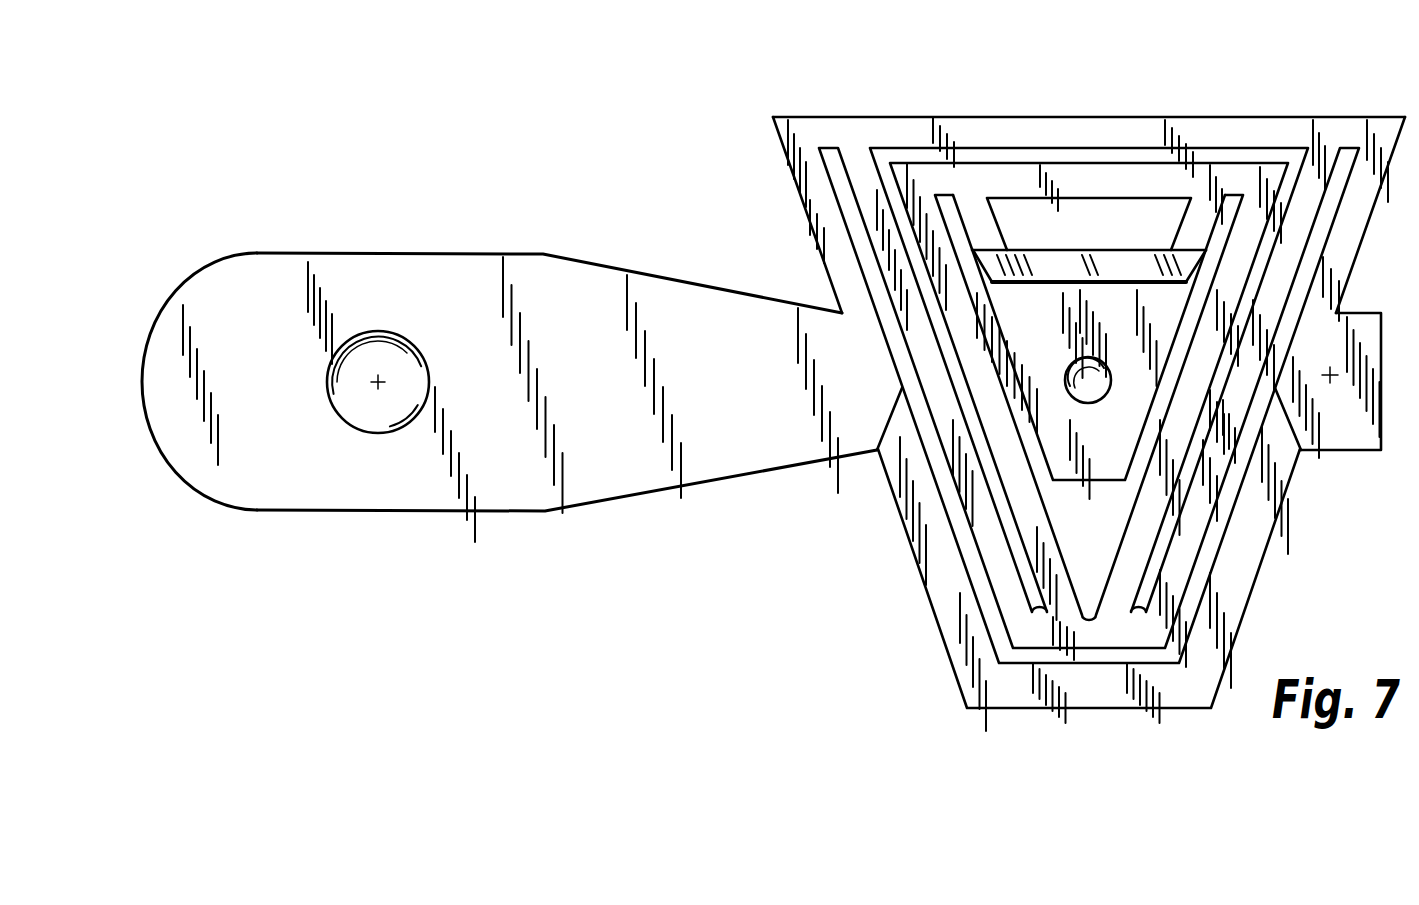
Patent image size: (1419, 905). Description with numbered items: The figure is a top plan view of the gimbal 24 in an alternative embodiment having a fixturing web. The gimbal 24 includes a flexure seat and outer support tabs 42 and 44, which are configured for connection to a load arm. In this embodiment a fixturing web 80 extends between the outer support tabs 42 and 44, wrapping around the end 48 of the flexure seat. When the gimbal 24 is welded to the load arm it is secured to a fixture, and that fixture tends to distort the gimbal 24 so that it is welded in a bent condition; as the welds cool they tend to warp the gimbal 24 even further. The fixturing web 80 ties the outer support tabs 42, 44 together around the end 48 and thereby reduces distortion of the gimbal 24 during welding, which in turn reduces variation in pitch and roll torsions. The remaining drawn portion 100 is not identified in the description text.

The holder assembly 24 is at (660, 143).
The mounting arm 42 is at (607, 478).
The tab 44 is at (1348, 453).
The outer V-shaped band 48 is at (1078, 656).
The inner V-shaped spring 80 is at (940, 588).
The base body 100 is at (945, 611).